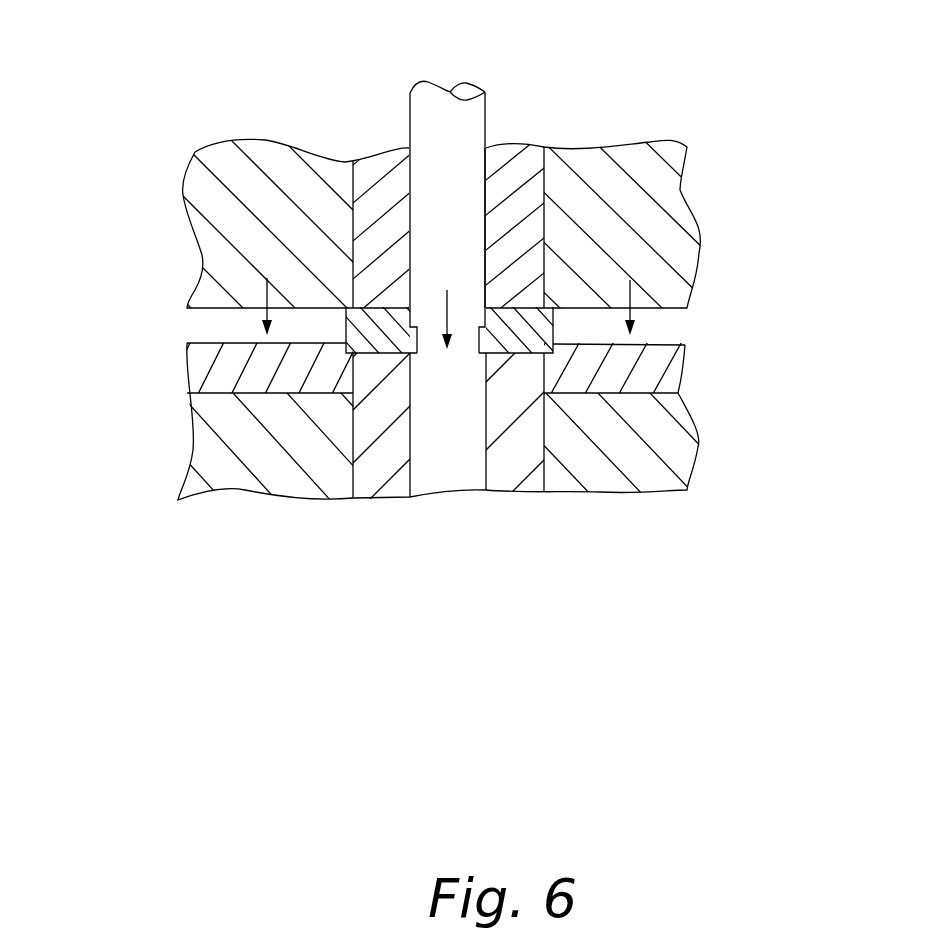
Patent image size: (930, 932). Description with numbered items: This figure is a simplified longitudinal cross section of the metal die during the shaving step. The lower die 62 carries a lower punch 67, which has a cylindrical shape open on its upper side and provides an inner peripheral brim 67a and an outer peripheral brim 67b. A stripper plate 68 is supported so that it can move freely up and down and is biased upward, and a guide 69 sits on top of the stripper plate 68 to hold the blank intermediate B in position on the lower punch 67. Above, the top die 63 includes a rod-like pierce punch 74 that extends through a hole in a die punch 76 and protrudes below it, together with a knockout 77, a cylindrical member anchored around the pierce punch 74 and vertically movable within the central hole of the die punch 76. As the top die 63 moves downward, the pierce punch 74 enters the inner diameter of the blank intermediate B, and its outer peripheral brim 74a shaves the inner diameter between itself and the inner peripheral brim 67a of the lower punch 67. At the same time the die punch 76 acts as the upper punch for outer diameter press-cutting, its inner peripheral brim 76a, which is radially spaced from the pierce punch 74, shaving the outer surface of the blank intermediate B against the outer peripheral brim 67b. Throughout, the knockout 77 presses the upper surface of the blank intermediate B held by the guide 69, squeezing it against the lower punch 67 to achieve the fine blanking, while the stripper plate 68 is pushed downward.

The lower die 62 is at (150, 451).
The top die 63 is at (160, 183).
The lower punch 67 is at (512, 460).
The inner peripheral brim 67a is at (483, 367).
The outer peripheral brim 67b is at (547, 363).
The stripper plate 68 is at (672, 458).
The guide 69 is at (660, 373).
The pierce punch 74 is at (433, 180).
The outer peripheral brim 74a is at (403, 323).
The die punch 76 is at (663, 213).
The inner peripheral brim 76a is at (533, 273).
The knockout 77 is at (520, 193).
The blank intermediate B is at (367, 334).